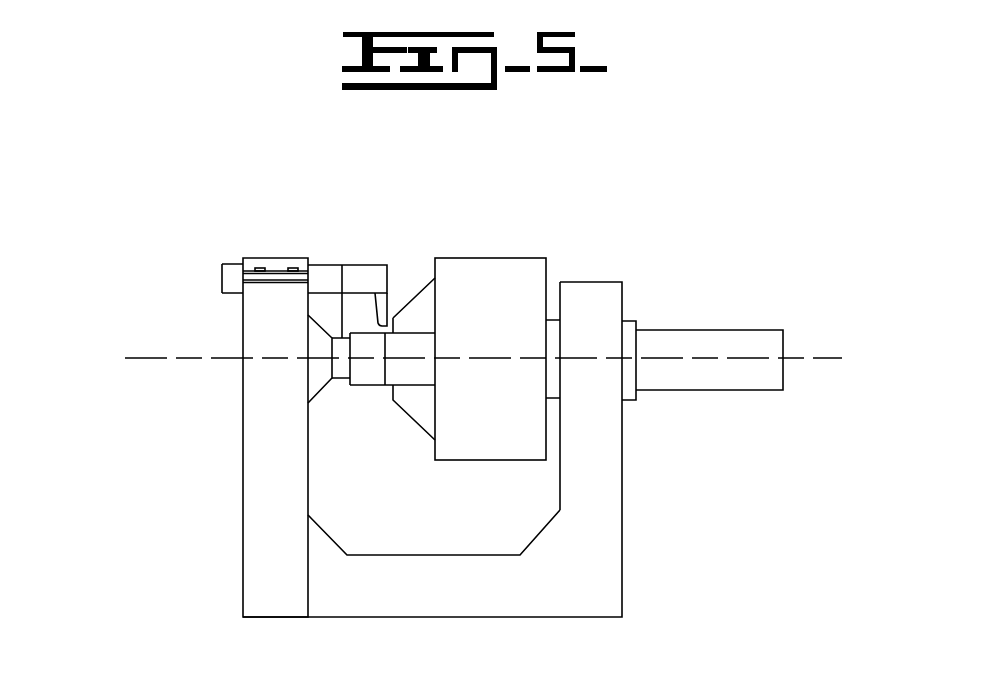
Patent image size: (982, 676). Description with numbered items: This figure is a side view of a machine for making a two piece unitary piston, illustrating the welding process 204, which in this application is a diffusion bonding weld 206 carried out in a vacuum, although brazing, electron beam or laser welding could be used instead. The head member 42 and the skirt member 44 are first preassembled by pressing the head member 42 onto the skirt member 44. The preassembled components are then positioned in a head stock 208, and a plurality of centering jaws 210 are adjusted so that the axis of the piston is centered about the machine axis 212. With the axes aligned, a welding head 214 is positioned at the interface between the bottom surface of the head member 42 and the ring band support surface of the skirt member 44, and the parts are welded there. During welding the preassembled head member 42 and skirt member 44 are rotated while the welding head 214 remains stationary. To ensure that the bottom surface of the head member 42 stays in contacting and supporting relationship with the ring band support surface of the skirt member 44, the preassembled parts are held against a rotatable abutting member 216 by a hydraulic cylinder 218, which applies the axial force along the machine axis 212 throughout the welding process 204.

The welding process 204 is at (190, 235).
The rotatable abutting member 216 is at (342, 268).
The welding head 214 is at (388, 308).
The head stock 208 is at (490, 258).
The centering jaws 210 is at (423, 432).
The head member 42 is at (361, 386).
The diffusion bonding weld 206 is at (385, 386).
The skirt member 44 is at (413, 333).
The machine axis 212 is at (818, 358).
The hydraulic cylinder 218 is at (688, 392).